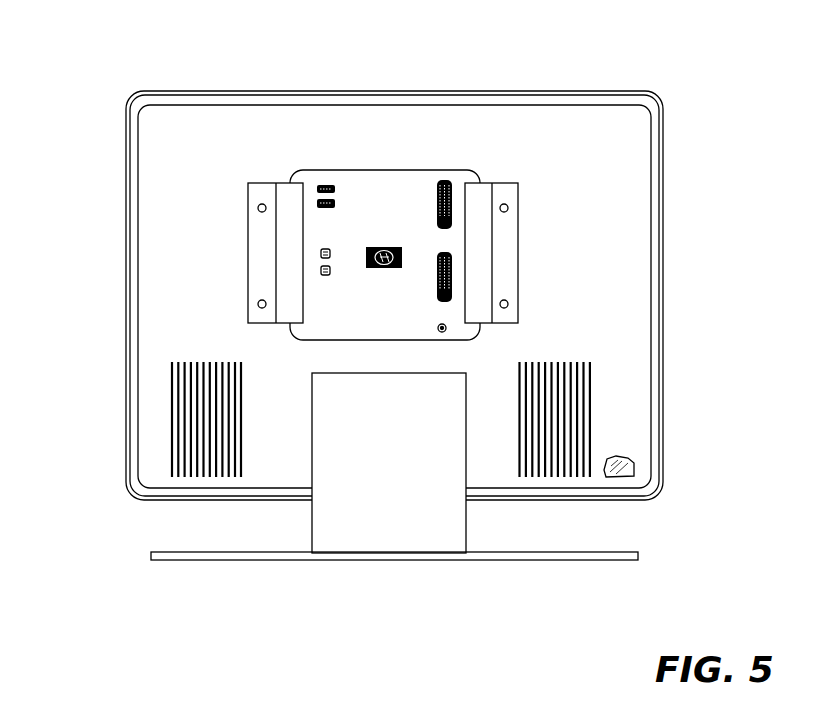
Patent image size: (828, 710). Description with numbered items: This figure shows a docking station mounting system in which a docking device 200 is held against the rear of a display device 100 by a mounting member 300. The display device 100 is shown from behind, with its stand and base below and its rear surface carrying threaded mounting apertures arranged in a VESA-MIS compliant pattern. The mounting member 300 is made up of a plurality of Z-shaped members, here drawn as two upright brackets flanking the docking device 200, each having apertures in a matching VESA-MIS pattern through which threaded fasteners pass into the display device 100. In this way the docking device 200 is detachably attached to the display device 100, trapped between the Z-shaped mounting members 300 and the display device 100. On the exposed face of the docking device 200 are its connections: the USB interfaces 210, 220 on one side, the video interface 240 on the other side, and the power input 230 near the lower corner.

The display device 100 is at (605, 90).
The docking device 200 is at (355, 307).
The USB interface 210 is at (316, 204).
The USB interface 220 is at (320, 268).
The power input 230 is at (447, 325).
The video interface 240 is at (449, 182).
The mounting member 300 is at (284, 181).